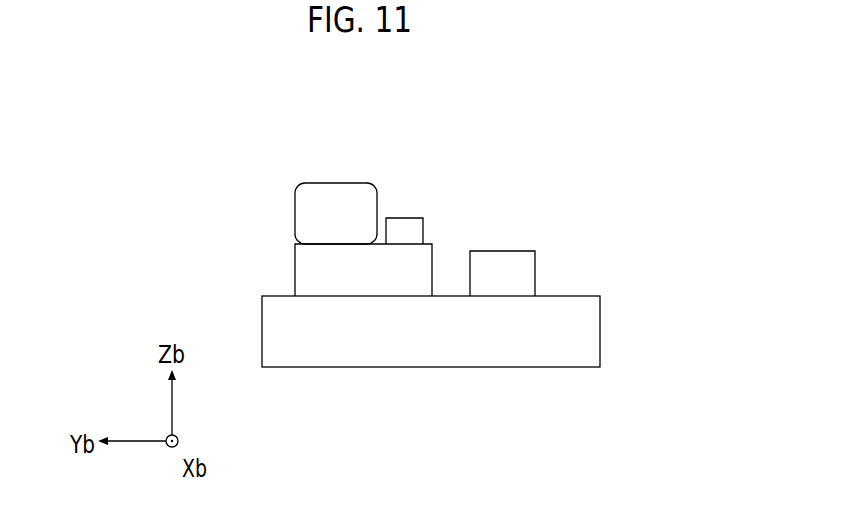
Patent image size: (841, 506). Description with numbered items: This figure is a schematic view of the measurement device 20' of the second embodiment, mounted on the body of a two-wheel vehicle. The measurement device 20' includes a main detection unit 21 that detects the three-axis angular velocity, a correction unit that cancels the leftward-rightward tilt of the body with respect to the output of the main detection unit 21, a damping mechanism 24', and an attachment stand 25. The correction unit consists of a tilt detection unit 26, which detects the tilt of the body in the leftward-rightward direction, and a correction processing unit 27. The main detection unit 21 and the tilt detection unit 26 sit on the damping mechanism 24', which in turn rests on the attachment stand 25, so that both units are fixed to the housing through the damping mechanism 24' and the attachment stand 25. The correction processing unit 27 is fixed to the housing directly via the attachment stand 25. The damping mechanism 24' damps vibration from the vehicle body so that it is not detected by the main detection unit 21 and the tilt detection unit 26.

The measurement device 20' is at (568, 108).
The main detection unit 21 is at (334, 207).
The damping mechanism 24' is at (322, 270).
The attachment stand 25 is at (578, 328).
The tilt detection unit 26 is at (405, 230).
The correction processing unit 27 is at (508, 268).